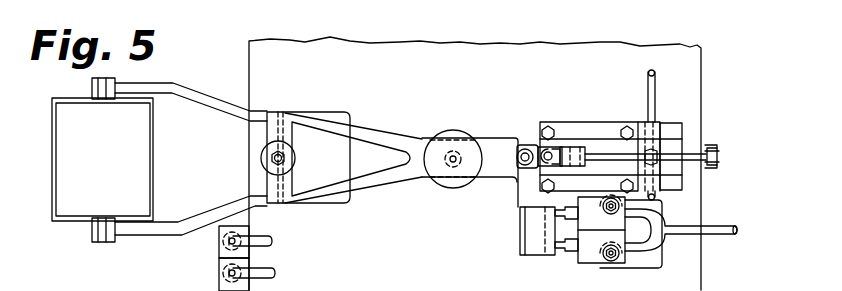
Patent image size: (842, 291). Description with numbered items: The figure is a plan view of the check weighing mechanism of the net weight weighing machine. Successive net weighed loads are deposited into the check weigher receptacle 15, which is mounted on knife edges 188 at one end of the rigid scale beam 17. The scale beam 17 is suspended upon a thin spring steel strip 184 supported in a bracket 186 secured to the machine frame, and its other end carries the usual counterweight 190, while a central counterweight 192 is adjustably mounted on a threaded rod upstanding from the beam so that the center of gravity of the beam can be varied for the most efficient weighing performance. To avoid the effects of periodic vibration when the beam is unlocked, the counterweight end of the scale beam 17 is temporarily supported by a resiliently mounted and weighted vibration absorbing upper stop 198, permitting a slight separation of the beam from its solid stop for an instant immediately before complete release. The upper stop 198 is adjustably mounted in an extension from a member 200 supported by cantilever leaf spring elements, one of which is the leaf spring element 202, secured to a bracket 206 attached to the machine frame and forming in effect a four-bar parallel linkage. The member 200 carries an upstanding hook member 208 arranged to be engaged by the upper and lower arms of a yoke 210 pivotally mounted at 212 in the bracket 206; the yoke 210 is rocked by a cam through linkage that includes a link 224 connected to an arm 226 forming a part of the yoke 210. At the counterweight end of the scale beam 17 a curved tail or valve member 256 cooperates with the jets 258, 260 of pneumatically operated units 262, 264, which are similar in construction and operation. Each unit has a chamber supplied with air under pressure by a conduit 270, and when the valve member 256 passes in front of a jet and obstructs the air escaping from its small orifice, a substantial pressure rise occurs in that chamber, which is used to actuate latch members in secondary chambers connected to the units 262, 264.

The check weigher receptacle 15 is at (52, 151).
The scale beam 17 is at (400, 111).
The spring steel strip 184 is at (276, 120).
The bracket 186 is at (345, 205).
The knife edges 188 is at (93, 85).
The counterweight 190 is at (444, 190).
The central counterweight 192 is at (296, 158).
The upper stop 198 is at (522, 142).
The member 200 is at (543, 147).
The cantilever leaf spring element 202 is at (572, 122).
The bracket 206 is at (683, 186).
The hook member 208 is at (558, 148).
The yoke 210 is at (580, 148).
The pivot 212 is at (656, 105).
The link 224 is at (719, 155).
The arm 226 is at (690, 150).
The valve member 256 is at (549, 257).
The jet 258 is at (560, 241).
The jet 260 is at (568, 212).
The pneumatically operated unit 262 is at (593, 264).
The pneumatically operated unit 264 is at (592, 225).
The conduit 270 is at (726, 237).